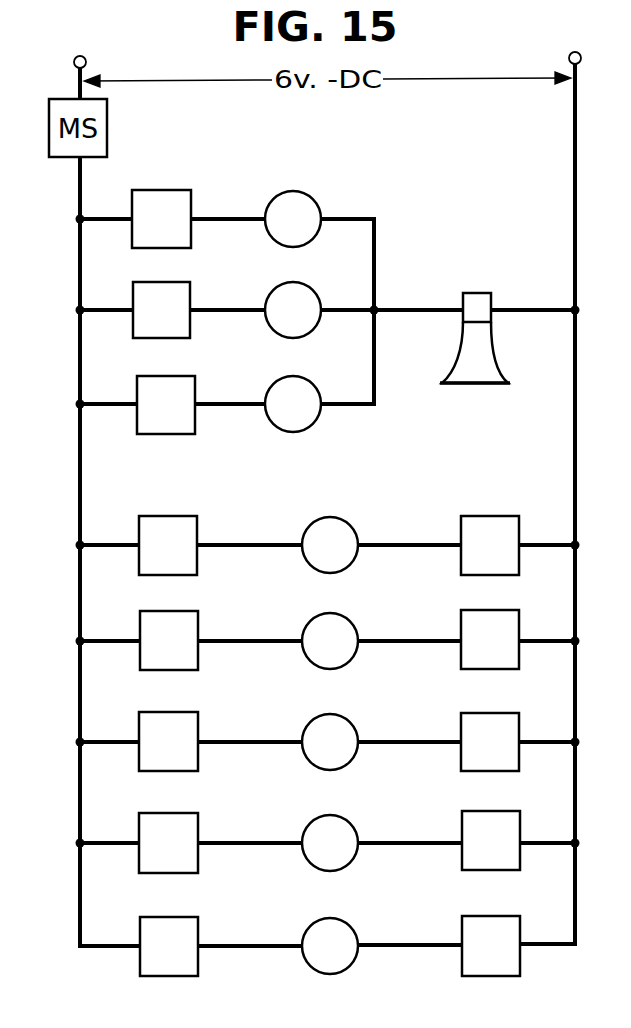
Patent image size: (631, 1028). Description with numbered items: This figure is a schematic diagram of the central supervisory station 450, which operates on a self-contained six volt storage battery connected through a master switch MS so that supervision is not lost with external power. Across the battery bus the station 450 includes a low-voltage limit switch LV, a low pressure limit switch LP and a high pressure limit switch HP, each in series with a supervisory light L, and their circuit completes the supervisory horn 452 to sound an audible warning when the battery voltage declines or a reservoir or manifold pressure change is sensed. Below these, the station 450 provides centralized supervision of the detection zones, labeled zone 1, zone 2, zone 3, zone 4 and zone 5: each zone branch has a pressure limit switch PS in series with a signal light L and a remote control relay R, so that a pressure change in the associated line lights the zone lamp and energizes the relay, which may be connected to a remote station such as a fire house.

The central supervisory station 450 is at (347, 199).
The supervisory horn 452 is at (473, 370).
The zone 1 alarm circuit (pressure switch PS1, lamp L1, relay R1) 1 is at (328, 529).
The zone 2 alarm circuit (pressure switch PS2, lamp L2, relay R2) 2 is at (328, 626).
The zone 3 alarm circuit (pressure switch PS3, lamp L3, relay R3) 3 is at (328, 727).
The zone 4 alarm circuit (pressure switch PS4, lamp L4, relay R4) 4 is at (328, 830).
The zone 5 alarm circuit (pressure switch PS5, lamp L5, relay R5) 5 is at (327, 932).